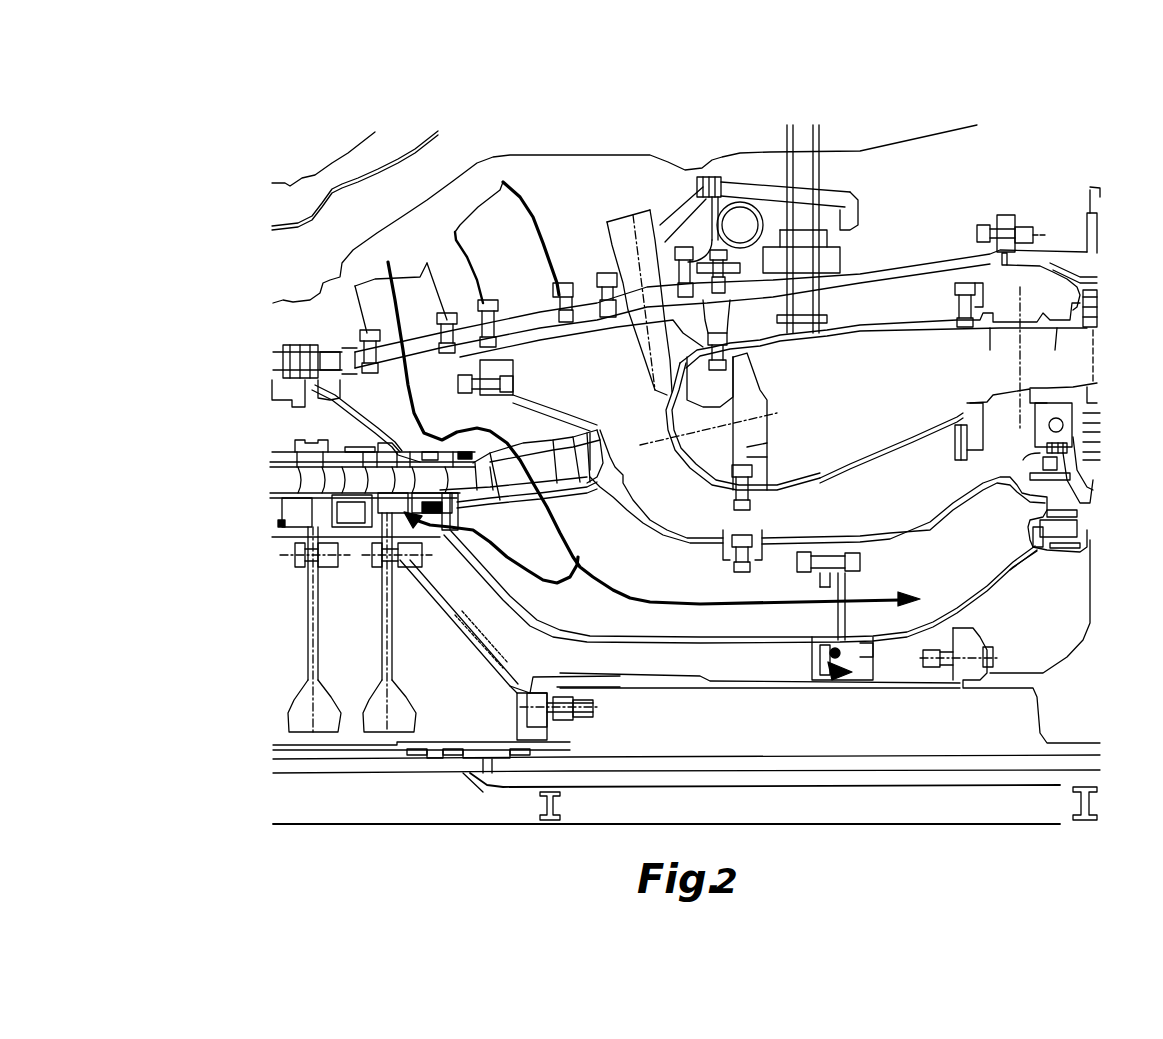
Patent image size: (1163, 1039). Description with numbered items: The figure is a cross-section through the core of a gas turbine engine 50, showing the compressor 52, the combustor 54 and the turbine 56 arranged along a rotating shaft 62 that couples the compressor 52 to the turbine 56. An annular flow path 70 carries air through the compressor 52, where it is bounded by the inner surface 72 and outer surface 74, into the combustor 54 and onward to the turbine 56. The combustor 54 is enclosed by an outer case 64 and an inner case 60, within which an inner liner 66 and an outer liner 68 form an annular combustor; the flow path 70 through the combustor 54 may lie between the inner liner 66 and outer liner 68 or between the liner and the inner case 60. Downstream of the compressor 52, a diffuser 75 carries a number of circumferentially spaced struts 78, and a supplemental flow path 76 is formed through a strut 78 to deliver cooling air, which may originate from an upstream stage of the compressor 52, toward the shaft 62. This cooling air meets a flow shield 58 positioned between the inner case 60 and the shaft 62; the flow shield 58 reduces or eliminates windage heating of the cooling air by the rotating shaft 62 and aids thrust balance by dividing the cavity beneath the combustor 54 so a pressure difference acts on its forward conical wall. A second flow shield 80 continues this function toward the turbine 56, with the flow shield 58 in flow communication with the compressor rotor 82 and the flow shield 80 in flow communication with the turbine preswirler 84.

The gas turbine engine 50 is at (694, 120).
The compressor 52 is at (258, 410).
The combustor 54 is at (960, 108).
The turbine 56 is at (1068, 178).
The flow shield 58 is at (553, 632).
The inner case 60 is at (690, 546).
The shaft 62 is at (955, 855).
The outer case 64 is at (865, 265).
The inner liner 66 is at (853, 470).
The outer liner 68 is at (840, 316).
The flow path 70 is at (640, 449).
The inner surface 72 is at (268, 495).
The outer surface 74 is at (272, 467).
The diffuser 75 is at (515, 430).
The supplemental flow path 76 is at (395, 310).
The strut 78 is at (558, 455).
The flow shield 80 is at (1000, 580).
The compressor rotor 82 is at (368, 575).
The turbine preswirler 84 is at (1057, 497).